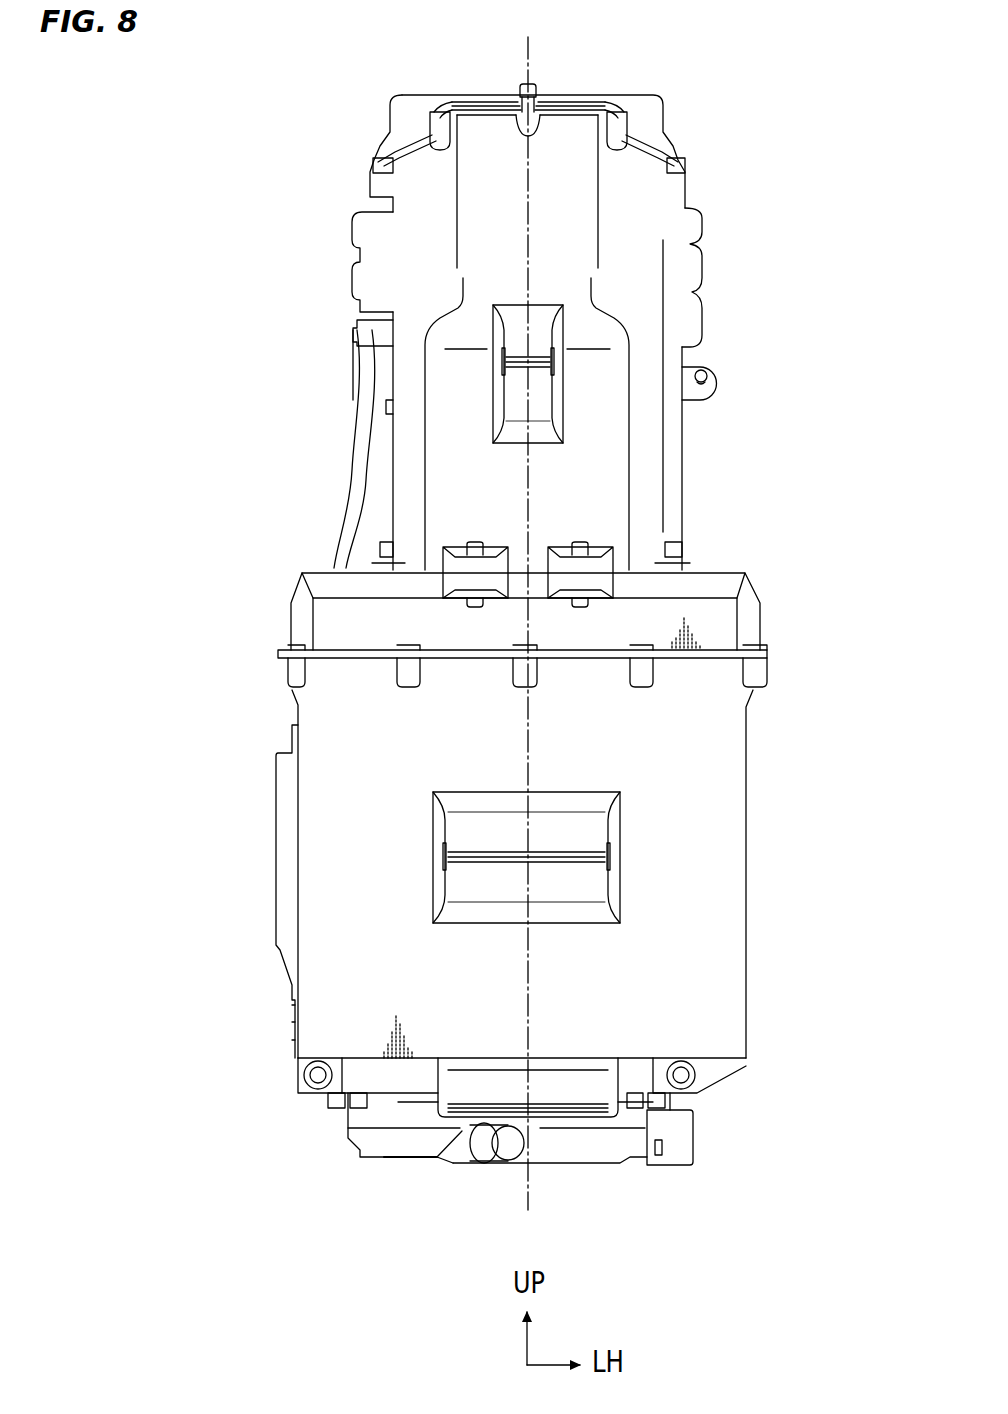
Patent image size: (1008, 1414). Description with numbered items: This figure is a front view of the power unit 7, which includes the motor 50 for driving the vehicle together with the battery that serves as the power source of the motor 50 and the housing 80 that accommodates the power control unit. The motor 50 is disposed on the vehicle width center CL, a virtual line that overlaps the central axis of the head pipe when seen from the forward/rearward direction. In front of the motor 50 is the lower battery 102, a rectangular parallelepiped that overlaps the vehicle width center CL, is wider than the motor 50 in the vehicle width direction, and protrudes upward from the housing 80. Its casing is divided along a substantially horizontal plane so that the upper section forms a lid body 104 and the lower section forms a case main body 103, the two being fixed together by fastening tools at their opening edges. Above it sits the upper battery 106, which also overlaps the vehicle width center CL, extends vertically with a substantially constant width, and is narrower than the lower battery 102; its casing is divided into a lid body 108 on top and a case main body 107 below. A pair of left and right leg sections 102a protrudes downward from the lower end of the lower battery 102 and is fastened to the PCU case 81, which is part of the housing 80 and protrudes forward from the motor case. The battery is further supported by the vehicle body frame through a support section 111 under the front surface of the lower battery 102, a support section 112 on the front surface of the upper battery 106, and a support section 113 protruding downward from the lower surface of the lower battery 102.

The power unit 7 is at (284, 80).
The motor 50 is at (766, 190).
The lid body 108 is at (654, 107).
The case main body 107 is at (656, 280).
The upper battery 106 is at (342, 233).
The support section on the front surface 112 is at (496, 397).
The lid body 104 is at (728, 622).
The lower battery 102 is at (752, 797).
The case main body 103 is at (730, 945).
The support section under the front surface 111 is at (438, 832).
The leg sections 102a is at (313, 1094).
The support section on the lower surface 113 is at (585, 1098).
The PCU case 81 is at (510, 1176).
The housing 80 is at (399, 1160).
The vehicle width center CL is at (536, 68).